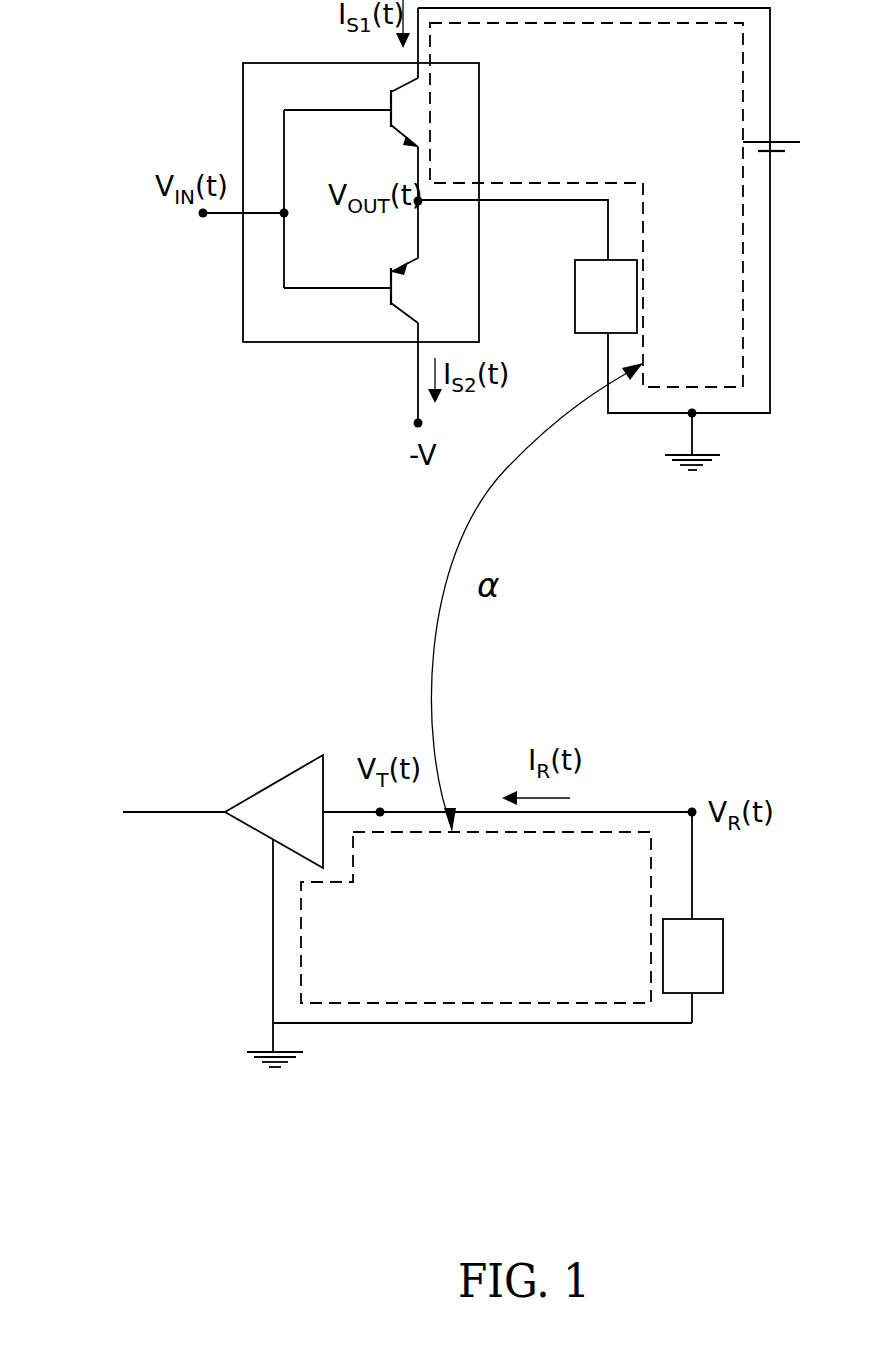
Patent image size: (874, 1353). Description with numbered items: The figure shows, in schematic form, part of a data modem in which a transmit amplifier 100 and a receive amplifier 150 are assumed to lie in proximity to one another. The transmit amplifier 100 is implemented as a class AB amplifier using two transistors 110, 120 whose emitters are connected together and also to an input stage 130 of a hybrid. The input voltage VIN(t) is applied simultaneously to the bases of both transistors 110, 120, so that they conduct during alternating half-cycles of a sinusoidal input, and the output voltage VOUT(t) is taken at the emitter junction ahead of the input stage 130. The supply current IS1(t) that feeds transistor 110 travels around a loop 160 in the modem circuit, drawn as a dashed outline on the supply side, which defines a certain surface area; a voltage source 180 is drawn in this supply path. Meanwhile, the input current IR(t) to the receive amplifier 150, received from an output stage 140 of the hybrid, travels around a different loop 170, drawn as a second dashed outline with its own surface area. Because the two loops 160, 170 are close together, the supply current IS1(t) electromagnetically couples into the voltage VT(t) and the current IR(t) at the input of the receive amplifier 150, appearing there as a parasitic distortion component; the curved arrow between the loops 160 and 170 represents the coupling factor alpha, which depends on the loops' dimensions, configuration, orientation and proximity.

The transmit amplifier 100 is at (252, 343).
The transistor 110 is at (392, 88).
The transistor 120 is at (406, 310).
The input stage of the hybrid 130 is at (628, 310).
The output stage of the hybrid 140 is at (715, 970).
The receive amplifier 150 is at (312, 826).
The loop 160 is at (535, 27).
The loop 170 is at (483, 1004).
The voltage source (battery) 180 is at (800, 142).